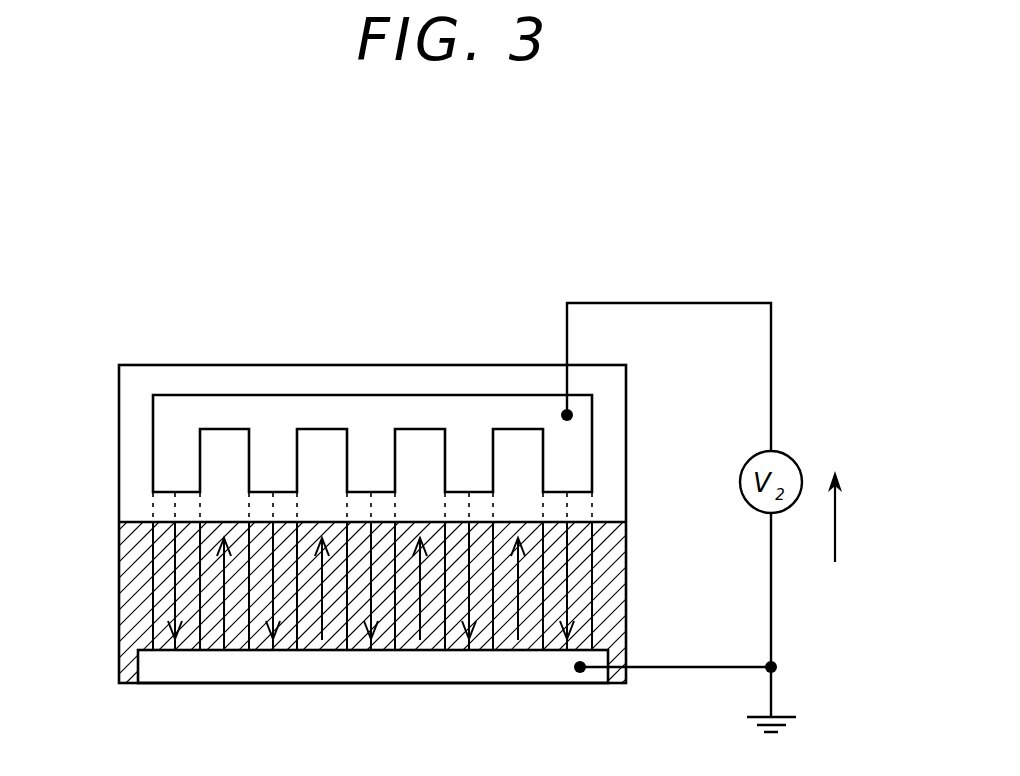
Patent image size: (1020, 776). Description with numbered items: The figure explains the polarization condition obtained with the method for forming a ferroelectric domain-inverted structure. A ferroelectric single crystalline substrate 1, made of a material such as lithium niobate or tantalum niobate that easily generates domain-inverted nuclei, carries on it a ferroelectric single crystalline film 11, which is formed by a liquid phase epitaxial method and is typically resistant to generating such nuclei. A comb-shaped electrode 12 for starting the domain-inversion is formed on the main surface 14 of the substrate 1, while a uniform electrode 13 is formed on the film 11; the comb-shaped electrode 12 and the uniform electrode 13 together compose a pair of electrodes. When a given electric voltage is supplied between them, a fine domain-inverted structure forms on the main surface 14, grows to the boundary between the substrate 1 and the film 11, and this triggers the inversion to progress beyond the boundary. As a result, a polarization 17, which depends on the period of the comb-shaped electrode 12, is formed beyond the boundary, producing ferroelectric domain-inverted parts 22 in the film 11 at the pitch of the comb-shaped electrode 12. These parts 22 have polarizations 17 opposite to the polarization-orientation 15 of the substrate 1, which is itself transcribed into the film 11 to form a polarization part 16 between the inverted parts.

The ferroelectric single crystalline substrate 1 is at (626, 405).
The ferroelectric single crystalline film 11 is at (137, 590).
The comb-shaped electrode 12 is at (177, 417).
The uniform electrode 13 is at (178, 667).
The main surface 14 is at (608, 502).
The polarization-orientation 15 is at (836, 538).
The polarization part 16 is at (228, 617).
The polarization 17 is at (166, 602).
The ferroelectric domain-inverted parts 22 is at (162, 551).